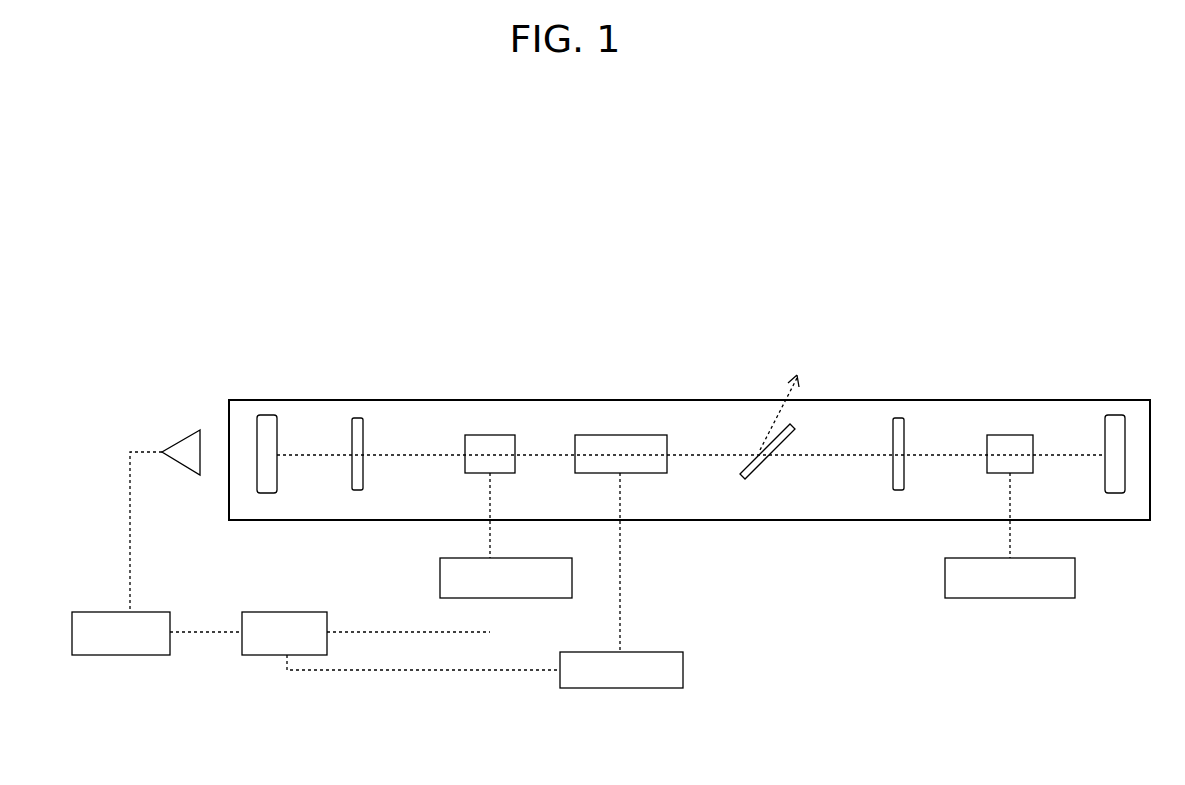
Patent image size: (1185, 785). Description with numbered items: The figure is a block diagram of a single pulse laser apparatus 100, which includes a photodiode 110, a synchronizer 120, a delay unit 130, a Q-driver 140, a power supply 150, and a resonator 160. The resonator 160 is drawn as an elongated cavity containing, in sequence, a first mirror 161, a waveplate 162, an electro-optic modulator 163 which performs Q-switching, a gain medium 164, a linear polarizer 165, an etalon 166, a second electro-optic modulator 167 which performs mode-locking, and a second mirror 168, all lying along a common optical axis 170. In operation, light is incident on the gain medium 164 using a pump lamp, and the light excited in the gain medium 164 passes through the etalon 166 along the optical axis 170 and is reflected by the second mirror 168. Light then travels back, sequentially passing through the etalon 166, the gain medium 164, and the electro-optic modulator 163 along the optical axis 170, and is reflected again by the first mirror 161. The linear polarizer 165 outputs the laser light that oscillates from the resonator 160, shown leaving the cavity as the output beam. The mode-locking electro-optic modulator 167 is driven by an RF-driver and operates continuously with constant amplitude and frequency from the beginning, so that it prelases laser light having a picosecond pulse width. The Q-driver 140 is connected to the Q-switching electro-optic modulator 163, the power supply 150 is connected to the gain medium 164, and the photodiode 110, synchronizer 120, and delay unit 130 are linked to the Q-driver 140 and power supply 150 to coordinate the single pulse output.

The single pulse laser apparatus 100 is at (612, 273).
The photodiode 110 is at (178, 466).
The synchronizer 120 is at (120, 656).
The delay unit 130 is at (262, 656).
The Q-driver 140 is at (520, 599).
The power supply 150 is at (620, 689).
The resonator 160 is at (712, 520).
The first mirror 161 is at (268, 415).
The waveplate 162 is at (357, 418).
The electro-optic modulator (EOM) 163 is at (490, 435).
The gain medium 164 is at (622, 435).
The linear polarizer 165 is at (757, 452).
The etalon 166 is at (898, 418).
The EOM 167 is at (1010, 435).
The second mirror 168 is at (1115, 415).
The optical axis 170 is at (823, 455).